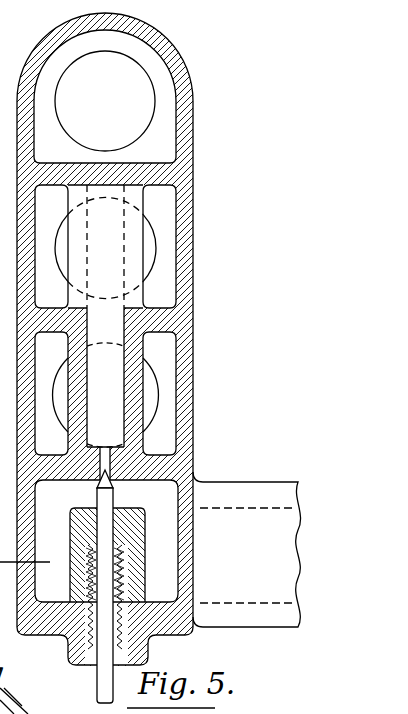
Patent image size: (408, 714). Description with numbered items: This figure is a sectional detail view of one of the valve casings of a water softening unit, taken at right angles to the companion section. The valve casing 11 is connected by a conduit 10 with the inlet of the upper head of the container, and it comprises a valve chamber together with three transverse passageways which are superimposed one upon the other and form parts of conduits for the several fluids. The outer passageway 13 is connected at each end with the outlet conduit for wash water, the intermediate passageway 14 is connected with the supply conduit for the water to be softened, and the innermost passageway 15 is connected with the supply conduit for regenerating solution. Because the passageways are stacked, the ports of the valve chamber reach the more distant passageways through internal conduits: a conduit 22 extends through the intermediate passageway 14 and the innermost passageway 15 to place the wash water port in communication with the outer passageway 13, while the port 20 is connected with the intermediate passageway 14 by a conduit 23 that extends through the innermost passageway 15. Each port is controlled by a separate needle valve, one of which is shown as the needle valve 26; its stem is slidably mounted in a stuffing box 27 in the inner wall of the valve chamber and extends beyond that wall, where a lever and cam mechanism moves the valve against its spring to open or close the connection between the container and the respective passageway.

The conduit 10 is at (247, 549).
The valve casing 11 is at (23, 322).
The outer passageway 13 is at (163, 108).
The intermediate passageway 14 is at (160, 286).
The innermost passageway 15 is at (162, 438).
The port 20 is at (105, 377).
The conduit 22 is at (143, 208).
The conduit 23 is at (108, 377).
The needle valve 26 is at (105, 498).
The stuffing box 27 is at (68, 650).